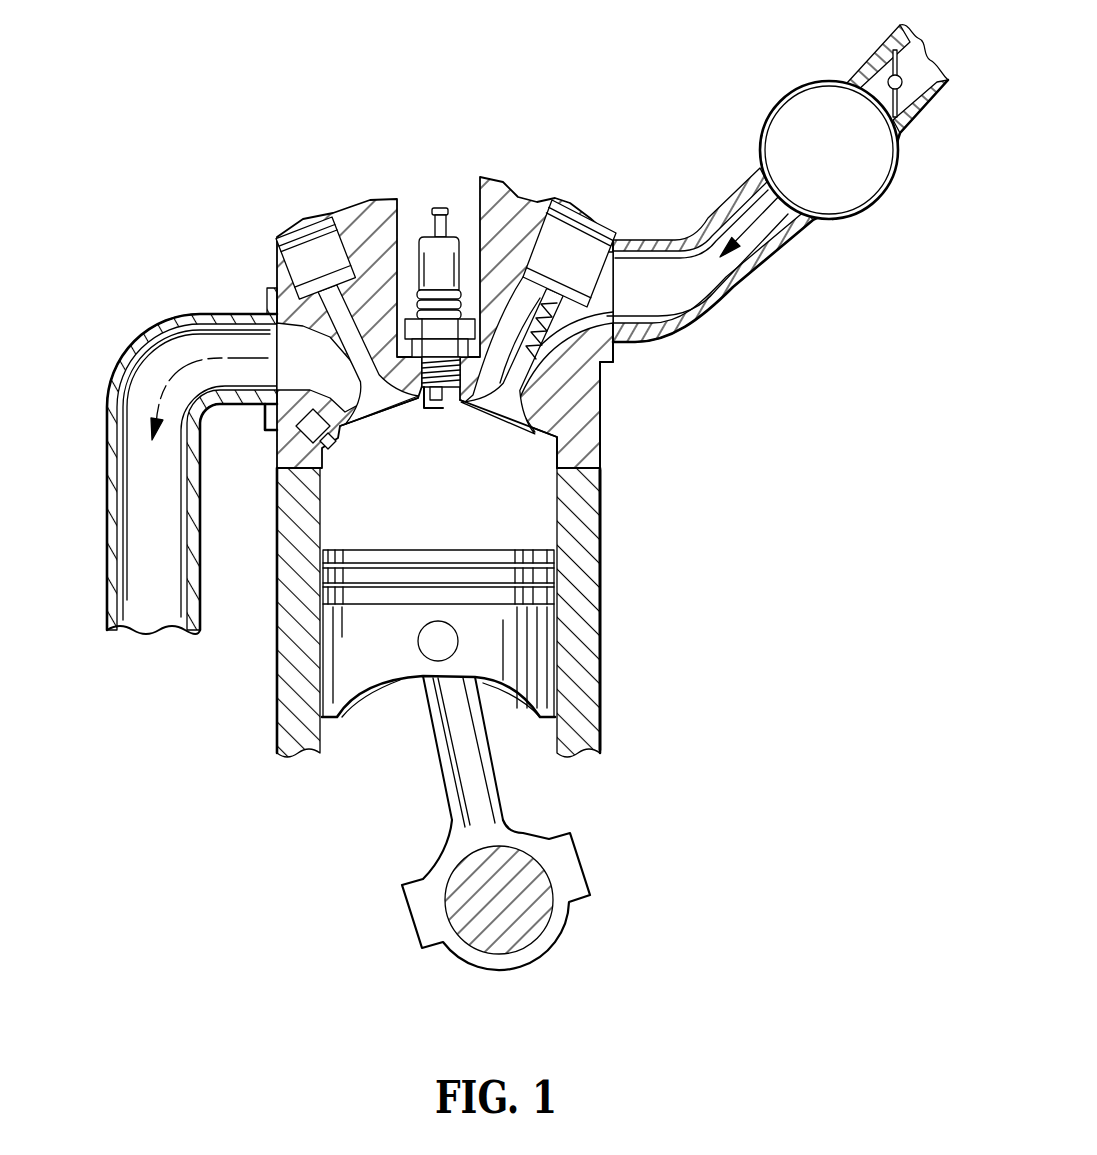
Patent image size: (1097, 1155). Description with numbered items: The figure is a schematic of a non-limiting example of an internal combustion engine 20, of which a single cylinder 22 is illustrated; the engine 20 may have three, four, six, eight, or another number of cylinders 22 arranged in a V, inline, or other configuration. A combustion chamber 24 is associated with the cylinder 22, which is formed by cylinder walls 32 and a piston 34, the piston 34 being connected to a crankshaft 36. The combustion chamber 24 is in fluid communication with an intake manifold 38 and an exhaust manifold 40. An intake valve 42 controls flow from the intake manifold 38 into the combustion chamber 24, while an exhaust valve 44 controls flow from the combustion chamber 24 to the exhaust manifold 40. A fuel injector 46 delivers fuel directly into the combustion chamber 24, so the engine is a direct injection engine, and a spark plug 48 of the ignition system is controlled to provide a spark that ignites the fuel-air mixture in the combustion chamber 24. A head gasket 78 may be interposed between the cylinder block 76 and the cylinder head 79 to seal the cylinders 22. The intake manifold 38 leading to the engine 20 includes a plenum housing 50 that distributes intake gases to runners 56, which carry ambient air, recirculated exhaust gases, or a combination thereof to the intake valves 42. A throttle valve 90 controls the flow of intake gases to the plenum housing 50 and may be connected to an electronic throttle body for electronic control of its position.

The internal combustion engine 20 is at (190, 197).
The cylinder 22 is at (413, 471).
The combustion chamber 24 is at (487, 471).
The cylinder walls 32 is at (600, 580).
The piston 34 is at (488, 643).
The crankshaft 36 is at (450, 870).
The intake manifold 38 is at (662, 168).
The exhaust manifold 40 is at (150, 318).
The intake valve 42 is at (585, 333).
The exhaust valve 44 is at (267, 289).
The fuel injector 46 is at (310, 426).
The spark plug 48 is at (428, 230).
The plenum housing 50 is at (880, 203).
The runners 56 is at (757, 272).
The cylinder block 76 is at (600, 640).
The head gasket 78 is at (278, 468).
The cylinder head 79 is at (585, 418).
The throttle valve 90 is at (940, 113).